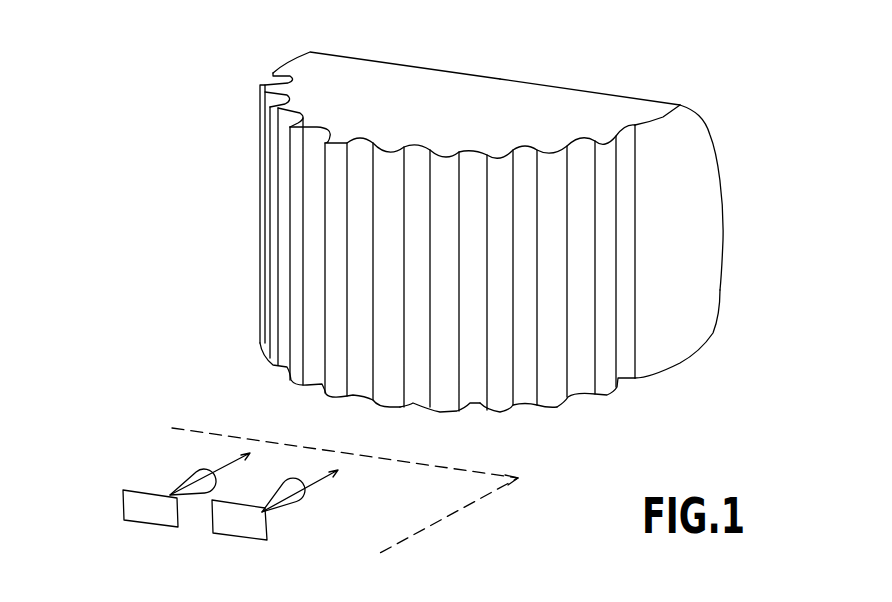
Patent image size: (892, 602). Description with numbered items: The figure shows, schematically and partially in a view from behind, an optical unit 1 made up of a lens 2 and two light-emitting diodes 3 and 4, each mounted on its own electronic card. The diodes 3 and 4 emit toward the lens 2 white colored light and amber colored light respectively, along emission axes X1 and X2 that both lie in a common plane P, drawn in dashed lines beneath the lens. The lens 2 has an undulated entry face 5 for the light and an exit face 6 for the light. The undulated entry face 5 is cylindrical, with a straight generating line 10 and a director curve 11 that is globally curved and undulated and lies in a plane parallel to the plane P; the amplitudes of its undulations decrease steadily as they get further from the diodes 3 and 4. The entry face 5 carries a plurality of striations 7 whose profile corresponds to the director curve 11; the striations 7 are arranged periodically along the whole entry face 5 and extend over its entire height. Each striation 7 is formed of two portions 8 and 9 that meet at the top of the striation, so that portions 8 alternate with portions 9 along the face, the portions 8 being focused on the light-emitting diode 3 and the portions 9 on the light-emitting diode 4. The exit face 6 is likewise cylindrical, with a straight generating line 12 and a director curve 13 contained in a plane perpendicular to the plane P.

The optical unit 1 is at (195, 159).
The lens 2 is at (420, 82).
The light-emitting diode 3 is at (138, 505).
The light-emitting diode 4 is at (245, 522).
The undulated entry face 5 is at (570, 383).
The exit face 6 is at (695, 237).
The striations 7 is at (330, 240).
The portion 8 is at (478, 398).
The portion 9 is at (505, 385).
The straight generating line 10 is at (597, 355).
The director curve 11 is at (268, 80).
The straight generating line 12 is at (542, 82).
The director curve 13 is at (720, 170).
The emission axis X1 is at (233, 465).
The emission axis X2 is at (317, 480).
The plane P is at (442, 508).